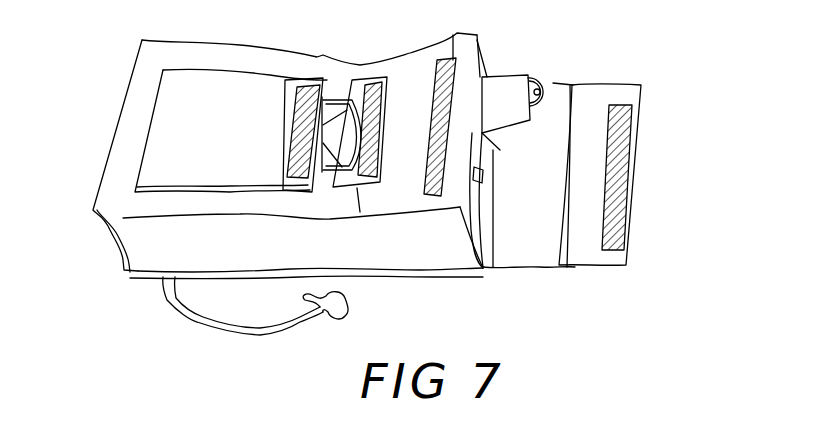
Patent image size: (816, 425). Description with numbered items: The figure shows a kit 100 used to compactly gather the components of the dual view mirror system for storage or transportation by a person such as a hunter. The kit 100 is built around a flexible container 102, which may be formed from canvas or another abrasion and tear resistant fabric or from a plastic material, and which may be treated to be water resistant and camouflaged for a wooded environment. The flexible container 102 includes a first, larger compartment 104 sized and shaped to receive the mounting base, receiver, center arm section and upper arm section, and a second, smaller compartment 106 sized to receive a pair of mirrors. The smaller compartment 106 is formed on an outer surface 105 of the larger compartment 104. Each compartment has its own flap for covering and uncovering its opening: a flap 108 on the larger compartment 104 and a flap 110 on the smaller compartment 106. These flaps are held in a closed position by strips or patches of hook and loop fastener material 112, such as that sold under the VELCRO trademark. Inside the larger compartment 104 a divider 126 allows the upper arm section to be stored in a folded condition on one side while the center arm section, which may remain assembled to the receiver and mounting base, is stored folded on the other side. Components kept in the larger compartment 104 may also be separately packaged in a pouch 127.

The kit 100 is at (656, 69).
The flexible container 102 is at (440, 278).
The larger compartment 104 is at (482, 211).
The outer surface 105 is at (127, 155).
The smaller compartment 106 is at (330, 84).
The flap 108 is at (607, 265).
The flap 110 is at (358, 214).
The hook and loop fastener material 112 is at (293, 123).
The divider 126 is at (485, 167).
The pouch 127 is at (512, 78).